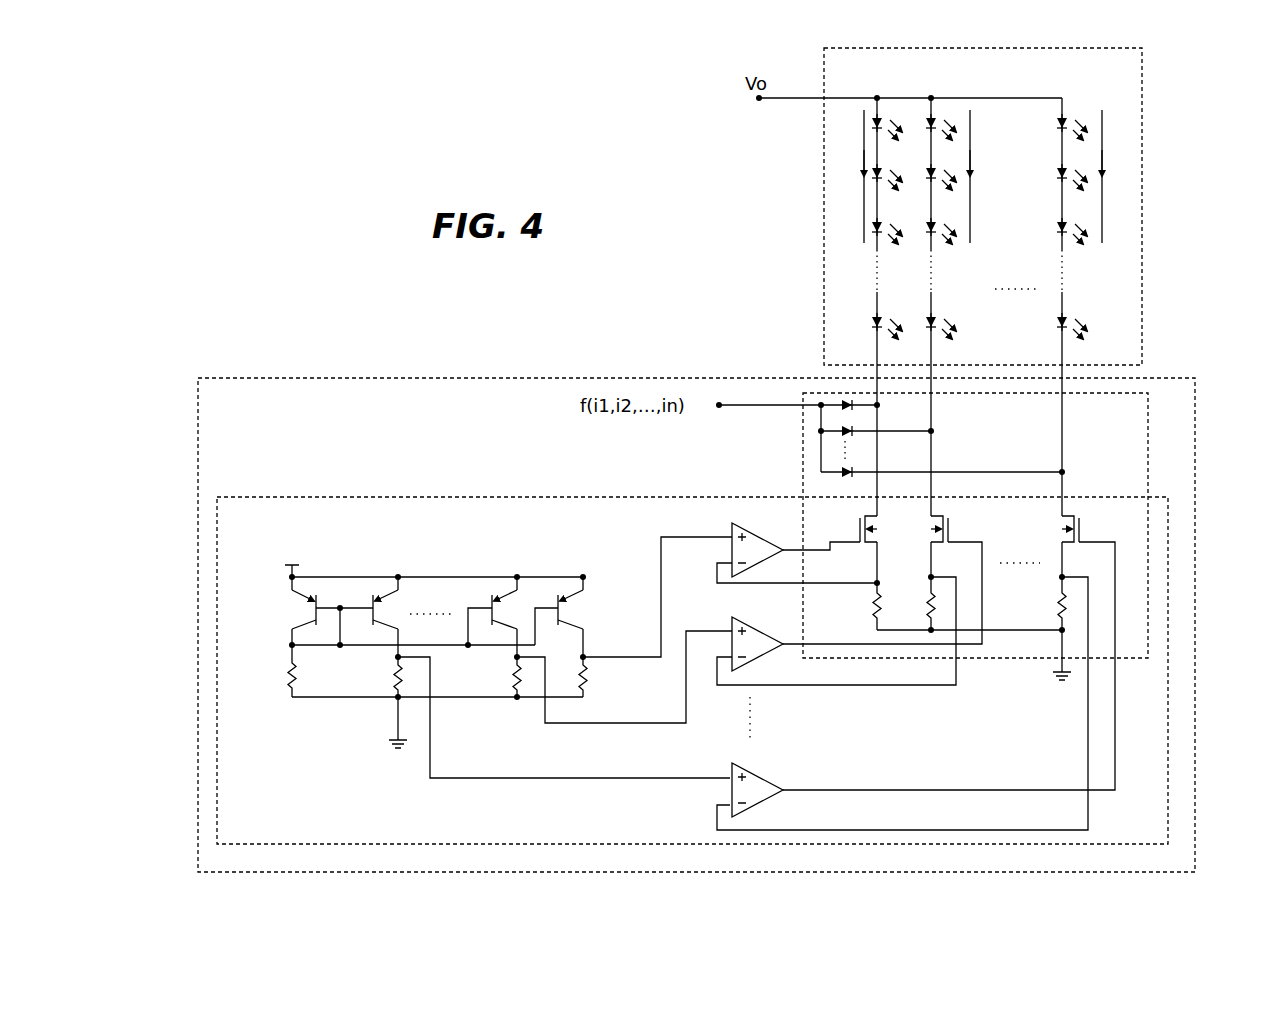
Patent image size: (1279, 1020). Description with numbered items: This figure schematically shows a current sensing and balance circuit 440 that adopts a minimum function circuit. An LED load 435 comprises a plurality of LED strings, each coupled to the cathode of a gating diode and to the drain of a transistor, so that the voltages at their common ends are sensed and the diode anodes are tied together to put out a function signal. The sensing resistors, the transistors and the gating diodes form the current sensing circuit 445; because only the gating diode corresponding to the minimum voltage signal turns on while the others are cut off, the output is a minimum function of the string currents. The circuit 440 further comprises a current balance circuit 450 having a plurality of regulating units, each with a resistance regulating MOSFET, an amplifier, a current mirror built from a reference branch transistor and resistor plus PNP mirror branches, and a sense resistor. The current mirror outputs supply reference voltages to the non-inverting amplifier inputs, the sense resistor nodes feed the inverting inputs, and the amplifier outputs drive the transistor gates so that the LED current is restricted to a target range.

The LED load 435 is at (1150, 206).
The current sensing and balance circuit 440 is at (1195, 416).
The current sensing circuit 445 is at (1147, 414).
The current balance circuit 450 is at (1167, 630).